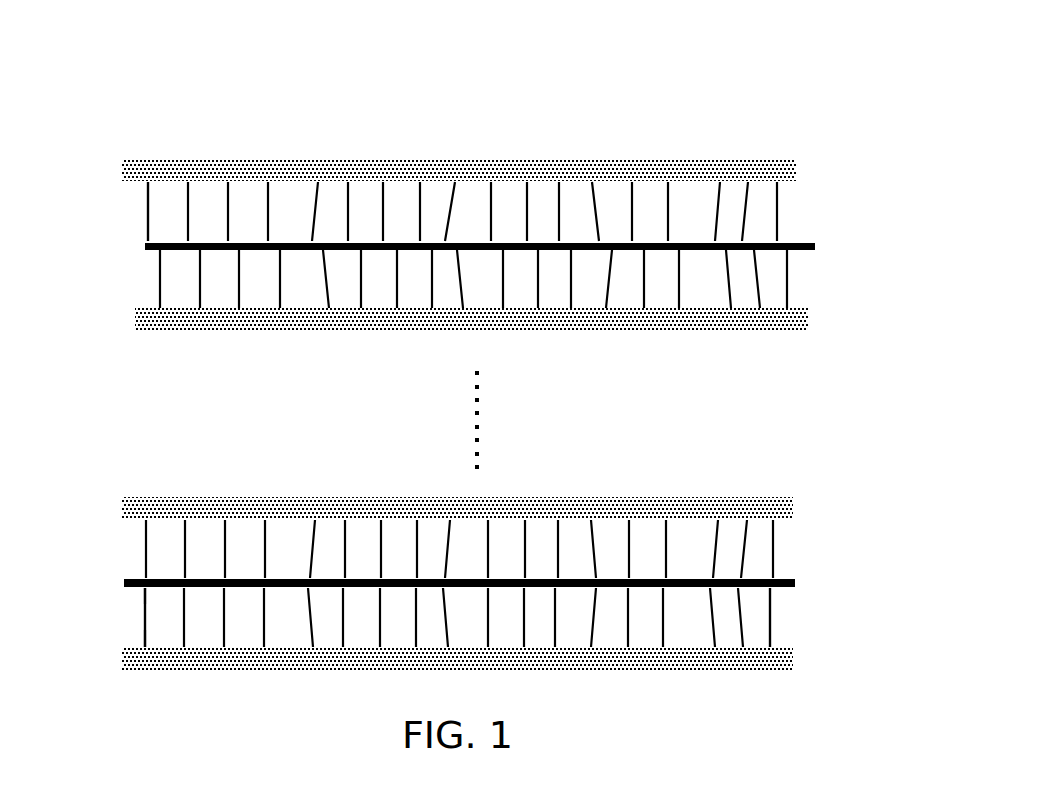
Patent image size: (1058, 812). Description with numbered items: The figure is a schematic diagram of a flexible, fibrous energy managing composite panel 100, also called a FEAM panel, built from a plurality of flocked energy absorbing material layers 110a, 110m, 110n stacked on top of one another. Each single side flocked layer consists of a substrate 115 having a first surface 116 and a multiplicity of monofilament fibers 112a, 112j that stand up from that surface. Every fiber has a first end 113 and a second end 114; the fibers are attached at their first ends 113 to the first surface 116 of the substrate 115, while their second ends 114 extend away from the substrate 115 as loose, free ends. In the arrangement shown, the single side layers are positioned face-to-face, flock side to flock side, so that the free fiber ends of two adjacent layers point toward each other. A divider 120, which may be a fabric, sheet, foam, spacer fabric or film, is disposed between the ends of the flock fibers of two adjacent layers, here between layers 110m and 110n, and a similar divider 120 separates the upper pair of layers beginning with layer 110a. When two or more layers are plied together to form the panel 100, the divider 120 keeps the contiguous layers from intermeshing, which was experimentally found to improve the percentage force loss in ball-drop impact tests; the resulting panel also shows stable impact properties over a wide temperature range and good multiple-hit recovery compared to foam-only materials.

The fibrous energy managing composite panel 100 is at (512, 123).
The flocked energy absorbing material layer 110a is at (782, 142).
The flocked energy absorbing material layer 110m is at (780, 487).
The flocked energy absorbing material layer 110n is at (800, 255).
The monofilament fiber 112a is at (145, 623).
The monofilament fiber 112j is at (770, 630).
The first end 113 is at (143, 643).
The second end 114 is at (145, 603).
The substrate 115 is at (285, 182).
The first surface 116 is at (147, 183).
The divider 120 is at (842, 597).